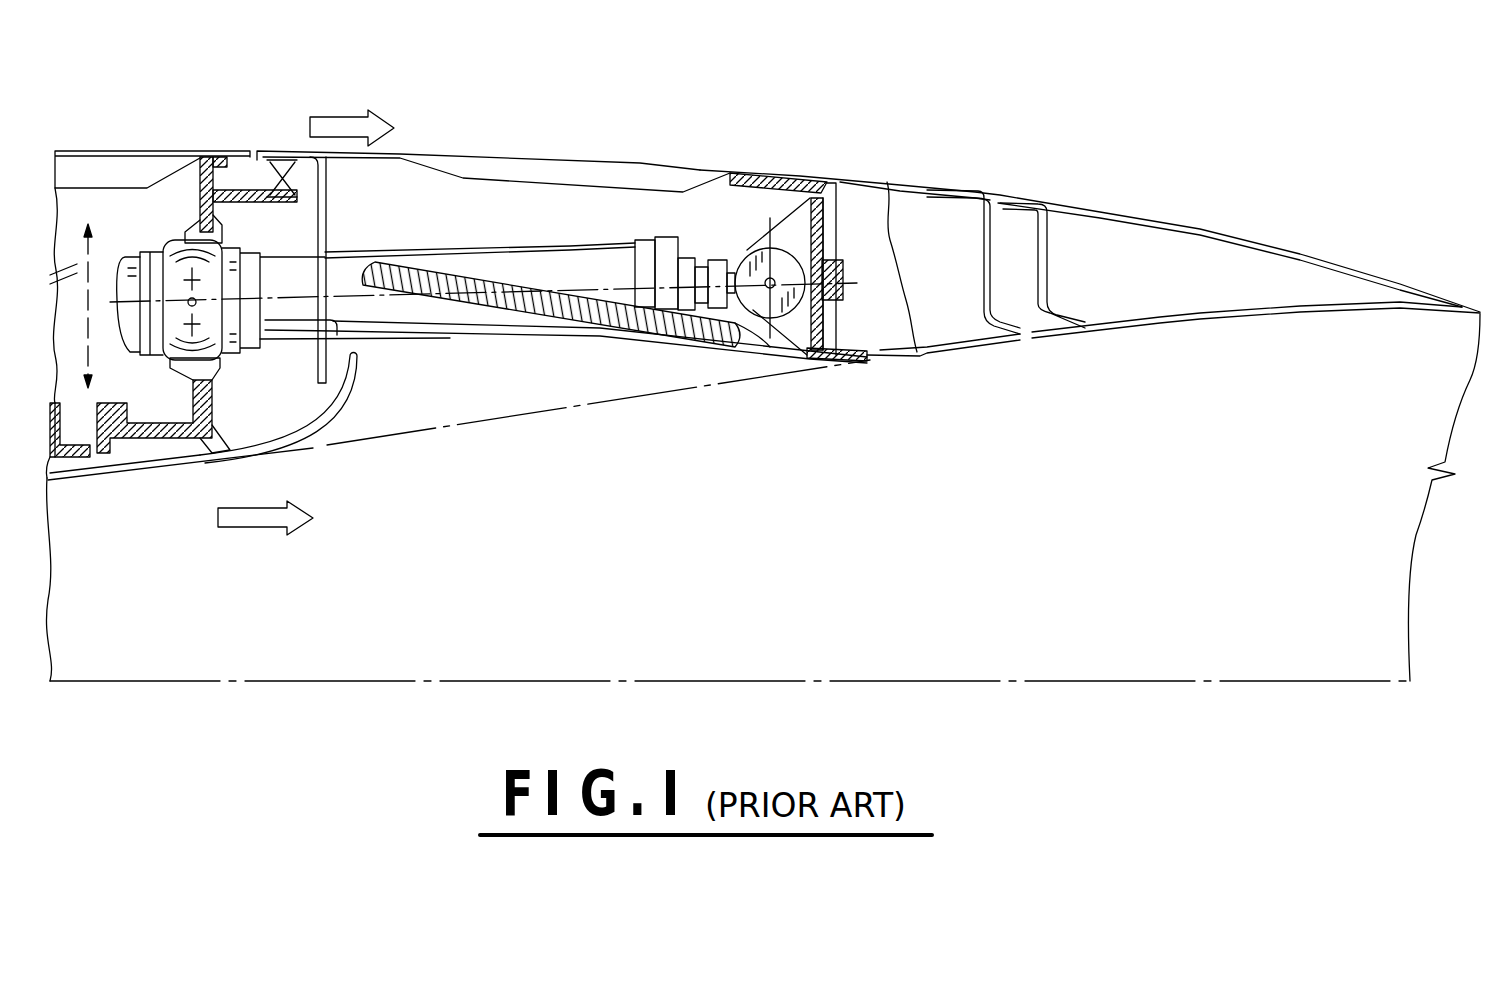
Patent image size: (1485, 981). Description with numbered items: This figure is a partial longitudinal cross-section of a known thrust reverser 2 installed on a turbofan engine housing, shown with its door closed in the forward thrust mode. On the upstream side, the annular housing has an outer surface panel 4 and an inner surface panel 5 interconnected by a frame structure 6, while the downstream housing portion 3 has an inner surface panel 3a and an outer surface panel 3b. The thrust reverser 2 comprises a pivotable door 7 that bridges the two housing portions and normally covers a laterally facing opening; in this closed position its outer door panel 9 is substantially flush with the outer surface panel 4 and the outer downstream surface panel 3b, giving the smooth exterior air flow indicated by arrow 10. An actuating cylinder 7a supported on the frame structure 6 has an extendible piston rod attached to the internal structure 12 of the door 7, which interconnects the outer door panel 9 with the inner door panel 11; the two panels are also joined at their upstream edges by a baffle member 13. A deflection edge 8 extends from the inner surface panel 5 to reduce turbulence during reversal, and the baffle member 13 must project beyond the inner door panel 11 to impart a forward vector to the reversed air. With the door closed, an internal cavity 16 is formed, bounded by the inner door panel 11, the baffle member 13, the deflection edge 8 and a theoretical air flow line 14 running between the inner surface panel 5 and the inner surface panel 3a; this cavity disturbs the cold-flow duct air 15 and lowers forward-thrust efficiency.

The thrust reverser 2 is at (795, 160).
The downstream housing portion 3 is at (1072, 277).
The inner surface panel 3a is at (1233, 322).
The outer surface panel 3b is at (1257, 240).
The outer surface panel 4 is at (133, 171).
The inner surface panel 5 is at (70, 482).
The frame structure 6 is at (190, 413).
The pivotable door 7 is at (582, 190).
The actuating cylinder 7a is at (483, 265).
The deflection edge 8 is at (335, 400).
The outer door panel 9 is at (690, 178).
The air flow arrow 10 is at (323, 128).
The inner door panel 11 is at (580, 322).
The internal structure 12 is at (800, 350).
The baffle member 13 is at (317, 360).
The theoretical air flow line 14 is at (654, 398).
The air flow 15 is at (250, 518).
The internal cavity 16 is at (478, 390).